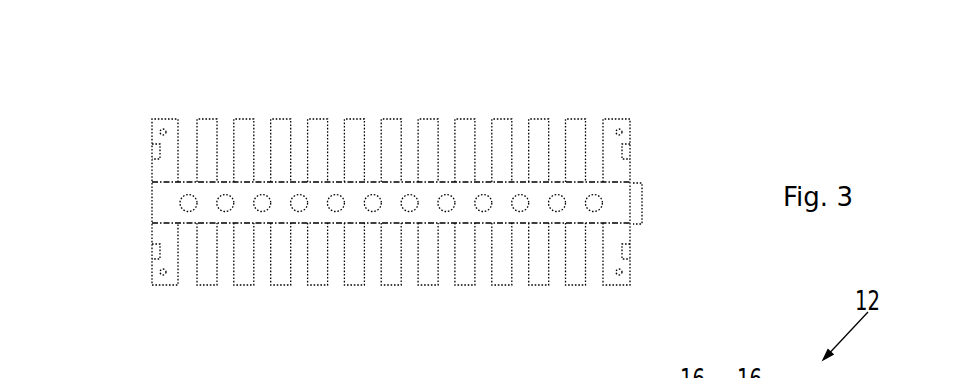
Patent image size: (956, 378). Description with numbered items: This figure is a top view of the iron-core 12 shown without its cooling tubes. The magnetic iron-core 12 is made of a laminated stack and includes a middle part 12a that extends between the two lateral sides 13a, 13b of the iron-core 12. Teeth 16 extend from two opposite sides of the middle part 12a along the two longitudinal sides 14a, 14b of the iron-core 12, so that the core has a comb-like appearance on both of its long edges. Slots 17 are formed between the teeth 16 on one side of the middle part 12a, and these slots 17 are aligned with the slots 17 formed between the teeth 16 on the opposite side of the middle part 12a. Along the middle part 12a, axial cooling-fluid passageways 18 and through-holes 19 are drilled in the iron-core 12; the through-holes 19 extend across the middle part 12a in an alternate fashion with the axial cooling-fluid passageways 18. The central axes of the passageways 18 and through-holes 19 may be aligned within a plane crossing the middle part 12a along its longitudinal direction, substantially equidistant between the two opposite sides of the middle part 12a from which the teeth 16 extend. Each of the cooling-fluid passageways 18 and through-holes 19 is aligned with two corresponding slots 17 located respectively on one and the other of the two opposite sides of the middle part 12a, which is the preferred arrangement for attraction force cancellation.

The iron-core 12 is at (677, 94).
The middle part 12a is at (643, 203).
The lateral side 13a is at (123, 233).
The lateral side 13b is at (660, 163).
The longitudinal side 14a is at (348, 76).
The longitudinal side 14b is at (426, 326).
The teeth 16 is at (430, 138).
The slots 17 is at (261, 290).
The axial cooling-fluid passageways 18 is at (186, 200).
The through-holes 19 is at (223, 200).